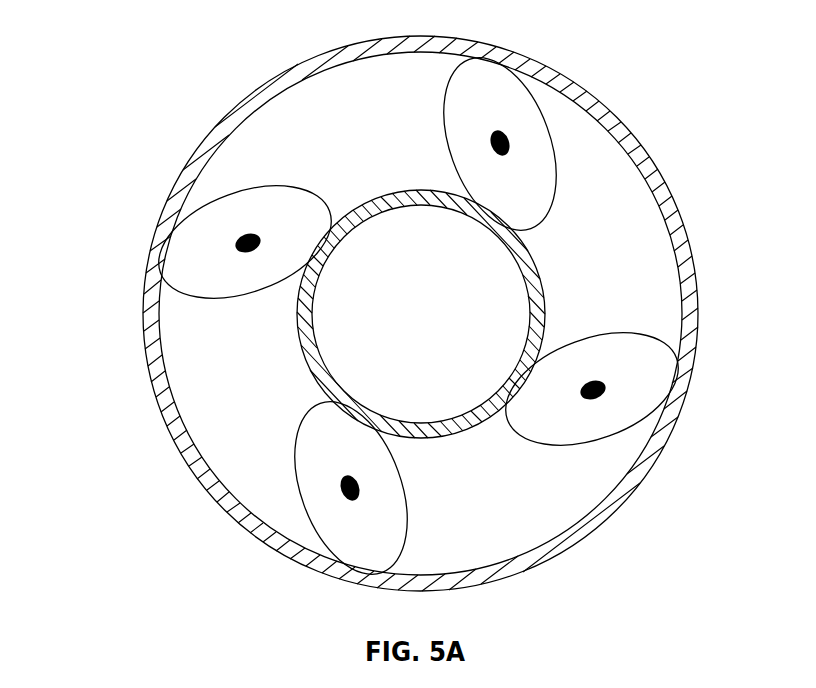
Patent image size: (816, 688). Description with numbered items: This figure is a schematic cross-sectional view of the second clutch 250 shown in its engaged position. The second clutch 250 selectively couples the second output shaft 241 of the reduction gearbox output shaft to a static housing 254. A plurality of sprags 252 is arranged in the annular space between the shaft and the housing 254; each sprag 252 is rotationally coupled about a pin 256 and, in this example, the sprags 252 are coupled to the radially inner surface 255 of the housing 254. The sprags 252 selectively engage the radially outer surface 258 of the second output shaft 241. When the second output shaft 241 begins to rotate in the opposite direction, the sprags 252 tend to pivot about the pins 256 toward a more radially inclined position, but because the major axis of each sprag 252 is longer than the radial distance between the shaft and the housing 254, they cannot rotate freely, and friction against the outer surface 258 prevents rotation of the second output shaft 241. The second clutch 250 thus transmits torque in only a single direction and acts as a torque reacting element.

The second clutch 250 is at (116, 28).
The second output shaft 241 is at (345, 217).
The sprags 252 is at (508, 98).
The housing 254 is at (586, 537).
The radially inner surface 255 is at (541, 545).
The pin 256 is at (507, 138).
The radially outer surface 258 is at (295, 300).